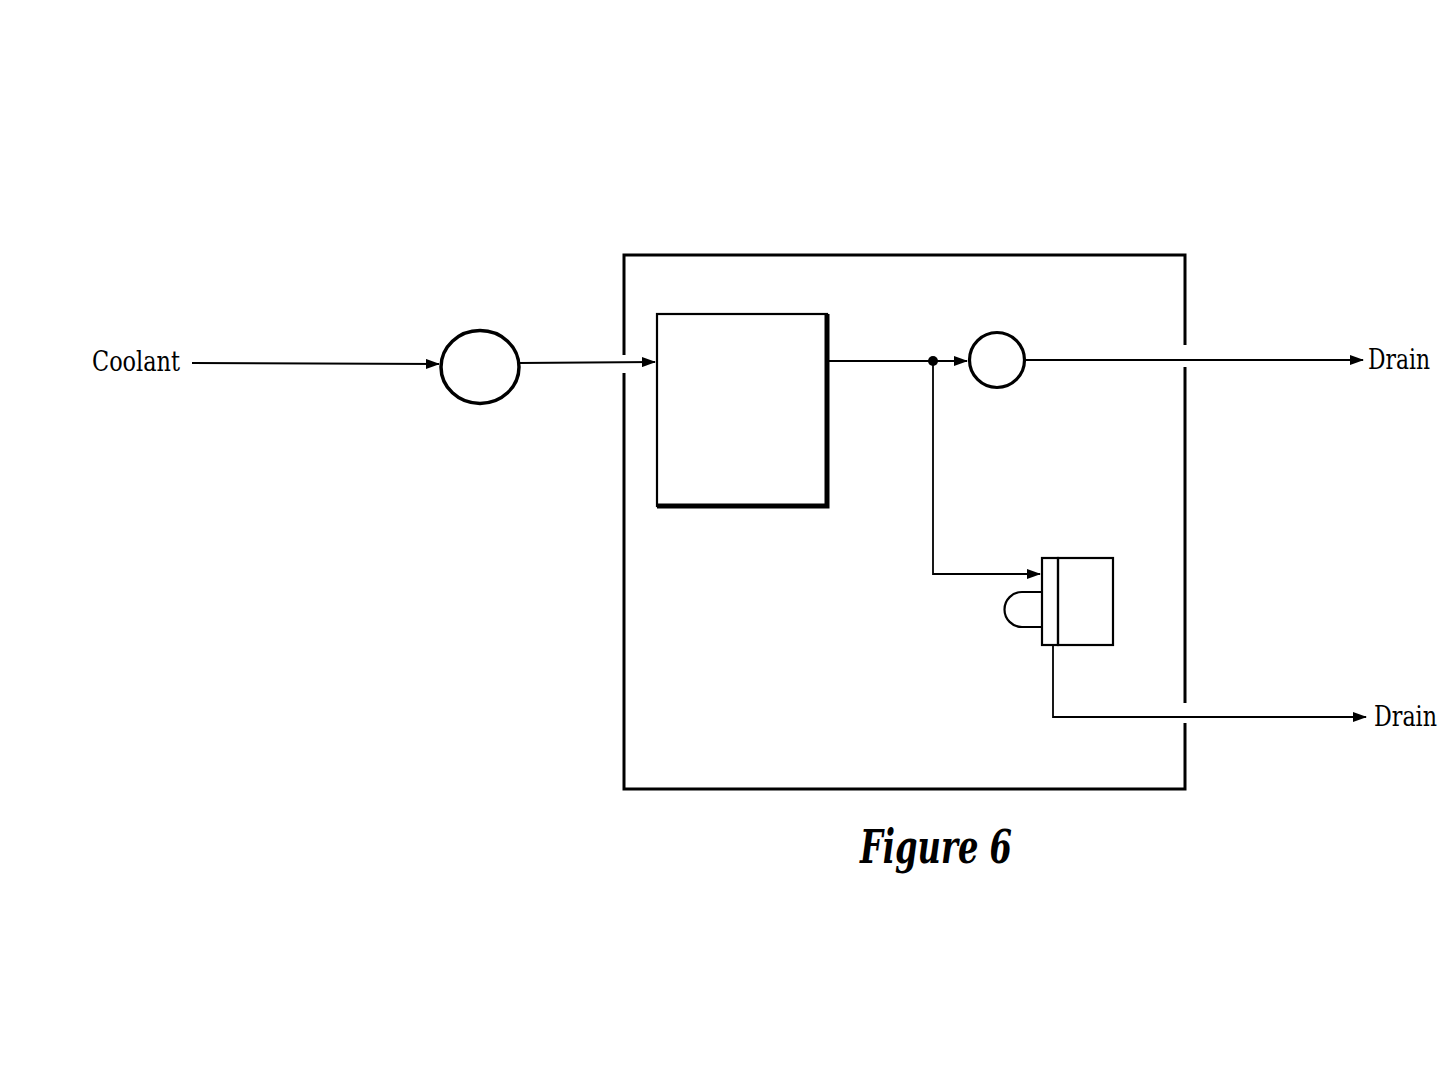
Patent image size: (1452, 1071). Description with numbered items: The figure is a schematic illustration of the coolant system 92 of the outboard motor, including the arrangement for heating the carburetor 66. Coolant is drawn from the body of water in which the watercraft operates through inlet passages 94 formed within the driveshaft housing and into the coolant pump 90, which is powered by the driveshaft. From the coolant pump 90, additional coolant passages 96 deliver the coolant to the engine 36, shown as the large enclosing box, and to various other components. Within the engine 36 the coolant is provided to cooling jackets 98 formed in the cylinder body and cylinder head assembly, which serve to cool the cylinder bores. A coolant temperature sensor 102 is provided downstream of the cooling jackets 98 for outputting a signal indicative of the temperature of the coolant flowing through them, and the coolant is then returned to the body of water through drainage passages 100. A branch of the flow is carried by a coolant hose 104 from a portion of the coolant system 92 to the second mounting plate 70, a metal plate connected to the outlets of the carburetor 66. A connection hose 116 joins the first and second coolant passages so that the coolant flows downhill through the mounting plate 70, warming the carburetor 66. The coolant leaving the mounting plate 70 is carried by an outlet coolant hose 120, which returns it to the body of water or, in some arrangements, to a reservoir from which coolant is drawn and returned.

The coolant system 92 is at (1221, 104).
The engine 36 is at (1085, 255).
The inlet passages 94 is at (322, 363).
The coolant pump 90 is at (470, 330).
The coolant passages 96 is at (580, 360).
The cooling jackets 98 is at (765, 508).
The coolant temperature sensor 102 is at (995, 332).
The drainage passages 100 is at (1088, 361).
The coolant hose 104 is at (933, 498).
The carburetor 66 is at (1086, 647).
The second mounting plate 70 is at (1040, 646).
The connection hose 116 is at (1004, 615).
The outlet coolant hose 120 is at (1145, 717).